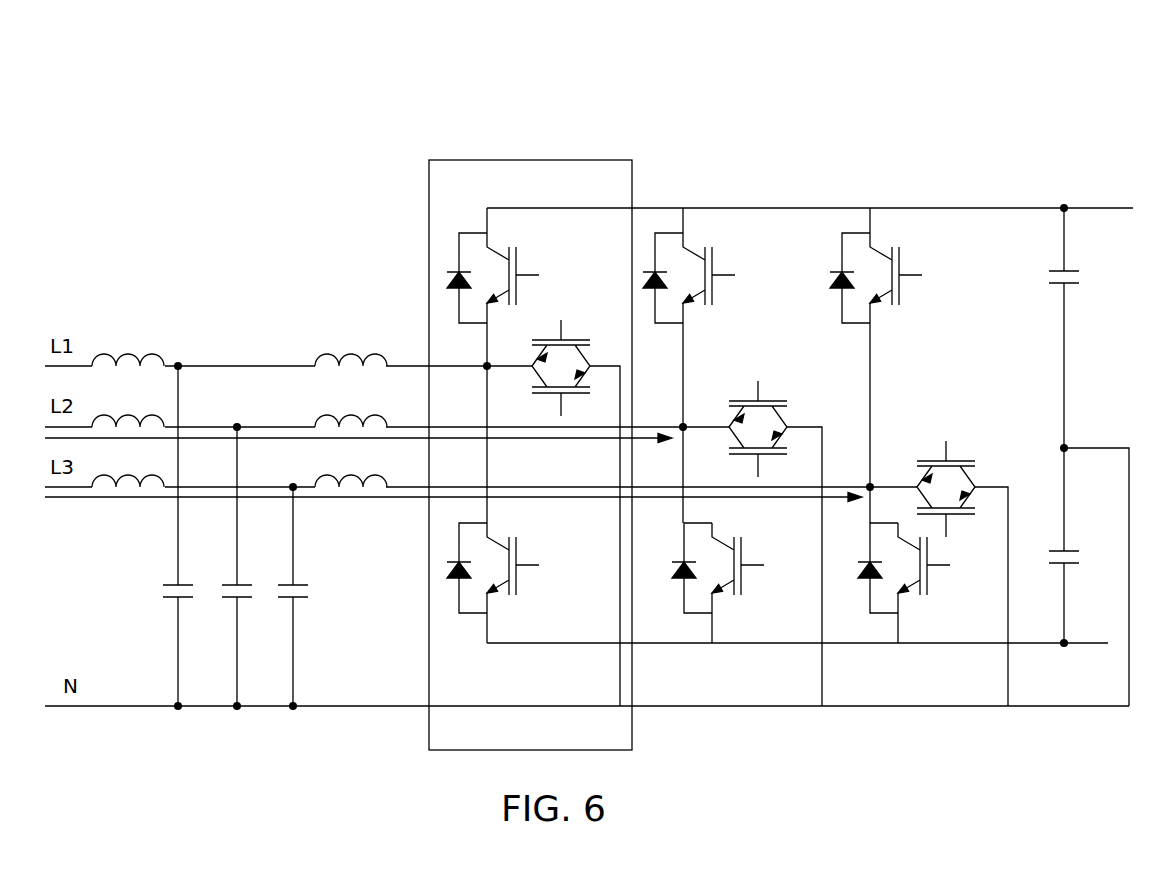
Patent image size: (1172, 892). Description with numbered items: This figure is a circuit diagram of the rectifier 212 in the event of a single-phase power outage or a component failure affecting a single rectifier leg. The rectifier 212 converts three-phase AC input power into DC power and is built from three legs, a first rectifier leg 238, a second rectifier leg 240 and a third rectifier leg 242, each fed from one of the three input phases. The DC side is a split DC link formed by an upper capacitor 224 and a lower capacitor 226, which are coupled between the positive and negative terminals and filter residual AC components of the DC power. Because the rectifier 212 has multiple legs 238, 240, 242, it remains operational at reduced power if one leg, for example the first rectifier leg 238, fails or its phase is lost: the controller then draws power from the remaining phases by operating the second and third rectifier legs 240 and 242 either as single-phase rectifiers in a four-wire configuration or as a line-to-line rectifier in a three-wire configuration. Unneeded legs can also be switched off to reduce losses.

The rectifier 212 is at (971, 106).
The first rectifier leg 238 is at (593, 158).
The second rectifier leg 240 is at (684, 190).
The third rectifier leg 242 is at (871, 190).
The upper capacitor 224 is at (1076, 270).
The lower capacitor 226 is at (1075, 550).